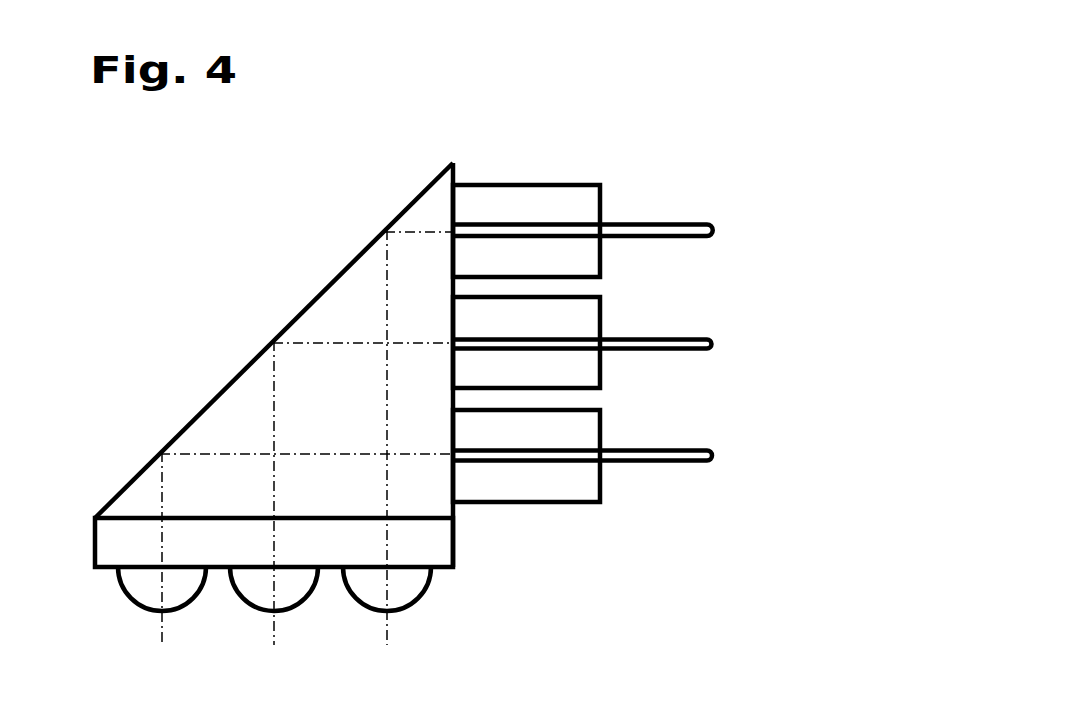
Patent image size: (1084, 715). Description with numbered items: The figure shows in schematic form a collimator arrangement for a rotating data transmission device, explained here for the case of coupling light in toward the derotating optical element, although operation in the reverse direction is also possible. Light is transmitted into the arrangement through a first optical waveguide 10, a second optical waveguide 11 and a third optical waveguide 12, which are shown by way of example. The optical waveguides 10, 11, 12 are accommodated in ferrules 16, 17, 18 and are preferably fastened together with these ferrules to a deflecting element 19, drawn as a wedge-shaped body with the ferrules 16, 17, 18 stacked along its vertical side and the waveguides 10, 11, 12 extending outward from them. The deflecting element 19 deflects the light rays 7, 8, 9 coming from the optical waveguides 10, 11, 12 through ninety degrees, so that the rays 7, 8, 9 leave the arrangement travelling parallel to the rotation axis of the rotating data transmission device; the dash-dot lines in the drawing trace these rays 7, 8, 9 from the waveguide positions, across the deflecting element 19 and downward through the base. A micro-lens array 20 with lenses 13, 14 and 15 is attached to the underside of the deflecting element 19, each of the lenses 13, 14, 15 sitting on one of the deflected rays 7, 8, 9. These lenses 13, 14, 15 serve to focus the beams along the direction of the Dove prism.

The light ray 7 is at (387, 633).
The light ray 8 is at (275, 633).
The light ray 9 is at (163, 633).
The first optical waveguide 10 is at (718, 220).
The second optical waveguide 11 is at (718, 332).
The third optical waveguide 12 is at (718, 443).
The lens 13 is at (408, 588).
The lens 14 is at (297, 588).
The lens 15 is at (185, 588).
The ferrule 16 is at (610, 208).
The ferrule 17 is at (610, 318).
The ferrule 18 is at (610, 432).
The deflecting element 19 is at (332, 310).
The micro-lens array 20 is at (465, 543).